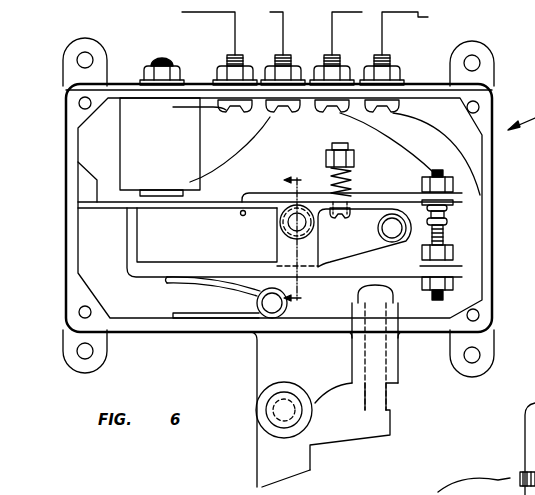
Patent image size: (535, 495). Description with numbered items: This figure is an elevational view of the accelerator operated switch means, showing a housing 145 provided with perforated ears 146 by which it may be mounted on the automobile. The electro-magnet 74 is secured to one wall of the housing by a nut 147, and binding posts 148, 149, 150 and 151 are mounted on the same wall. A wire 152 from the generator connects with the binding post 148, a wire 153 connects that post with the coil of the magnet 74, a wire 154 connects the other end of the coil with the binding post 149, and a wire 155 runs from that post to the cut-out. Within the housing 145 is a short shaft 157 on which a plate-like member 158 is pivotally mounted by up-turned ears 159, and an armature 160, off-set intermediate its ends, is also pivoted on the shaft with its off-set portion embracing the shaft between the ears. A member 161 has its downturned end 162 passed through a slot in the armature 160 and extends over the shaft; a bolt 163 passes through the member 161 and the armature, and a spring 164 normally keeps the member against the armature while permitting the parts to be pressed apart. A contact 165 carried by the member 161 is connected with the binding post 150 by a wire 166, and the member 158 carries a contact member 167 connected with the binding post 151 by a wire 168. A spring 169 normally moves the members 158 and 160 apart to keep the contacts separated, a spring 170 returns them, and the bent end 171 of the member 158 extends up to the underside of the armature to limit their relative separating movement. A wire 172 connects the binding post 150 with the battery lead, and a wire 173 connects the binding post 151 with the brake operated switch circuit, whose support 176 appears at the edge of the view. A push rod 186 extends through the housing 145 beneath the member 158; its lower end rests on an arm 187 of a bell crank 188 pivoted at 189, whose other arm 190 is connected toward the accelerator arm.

The electro-magnet 74 is at (128, 127).
The housing 145 is at (160, 334).
The perforated ears 146 is at (101, 53).
The nut 147 is at (173, 66).
The binding post 148 is at (240, 57).
The binding post 149 is at (290, 57).
The binding post 150 is at (334, 57).
The binding post 151 is at (387, 57).
The wire 152 is at (182, 12).
The wire 153 is at (214, 108).
The wire 154 is at (238, 157).
The wire 155 is at (293, 28).
The short shaft 157 is at (289, 224).
The plate-like member 158 is at (229, 254).
The up-turned ears 159 is at (311, 256).
The armature 160 is at (185, 209).
The member 161 is at (396, 201).
The downturned end 162 is at (240, 214).
The bolt 163 is at (338, 143).
The spring 164 is at (354, 176).
The contact 165 is at (452, 214).
The wire 166 is at (372, 143).
The contact member 167 is at (455, 292).
The wire 168 is at (448, 138).
The spring 169 is at (376, 257).
The spring 170 is at (257, 304).
The bent end 171 is at (127, 243).
The wire 172 is at (351, 33).
The wire 173 is at (446, 252).
The support 176 is at (524, 434).
The push rod 186 is at (378, 404).
The arm 187 is at (363, 429).
The bell crank 188 is at (247, 481).
The pivot 189 is at (262, 421).
The arm 190 is at (288, 470).